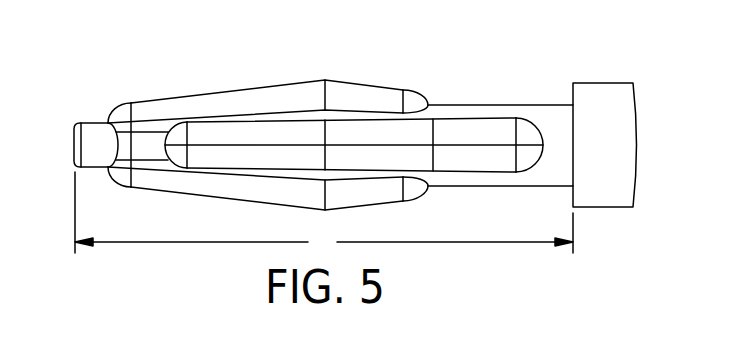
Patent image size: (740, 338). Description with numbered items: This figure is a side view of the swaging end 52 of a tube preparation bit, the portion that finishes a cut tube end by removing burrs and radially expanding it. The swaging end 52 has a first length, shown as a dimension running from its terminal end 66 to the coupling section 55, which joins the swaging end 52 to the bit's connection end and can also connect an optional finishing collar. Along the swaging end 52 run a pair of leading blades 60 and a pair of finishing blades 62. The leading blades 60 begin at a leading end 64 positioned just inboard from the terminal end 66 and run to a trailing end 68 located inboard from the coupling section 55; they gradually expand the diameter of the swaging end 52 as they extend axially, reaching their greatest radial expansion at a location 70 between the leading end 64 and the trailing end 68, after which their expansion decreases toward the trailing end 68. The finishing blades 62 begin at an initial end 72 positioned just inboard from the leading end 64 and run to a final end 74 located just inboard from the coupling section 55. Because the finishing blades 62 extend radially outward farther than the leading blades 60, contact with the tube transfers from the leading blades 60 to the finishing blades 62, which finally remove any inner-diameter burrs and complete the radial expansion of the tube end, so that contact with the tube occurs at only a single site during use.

The swaging end 52 is at (74, 146).
The coupling section 55 is at (602, 193).
The leading blades 60 is at (255, 98).
The finishing blades 62 is at (472, 133).
The leading end 64 is at (115, 108).
The terminal end 66 is at (75, 138).
The trailing end 68 is at (428, 104).
The location 70 is at (325, 80).
The initial end 72 is at (164, 146).
The final end 74 is at (543, 146).